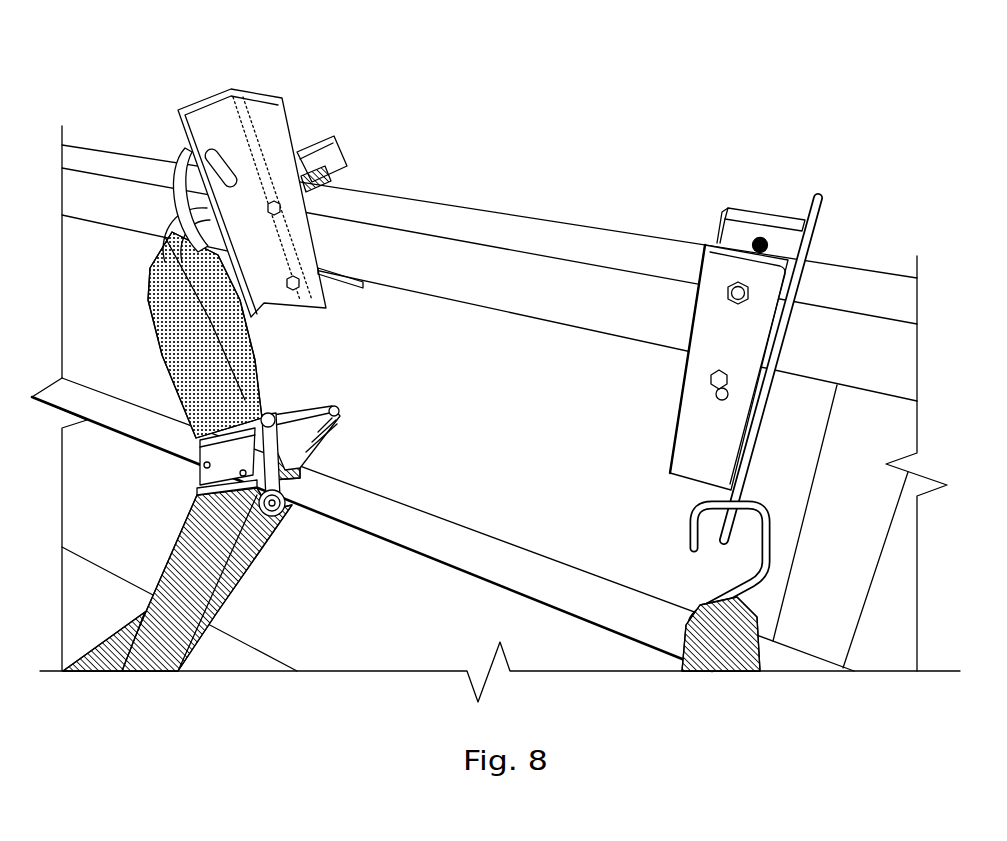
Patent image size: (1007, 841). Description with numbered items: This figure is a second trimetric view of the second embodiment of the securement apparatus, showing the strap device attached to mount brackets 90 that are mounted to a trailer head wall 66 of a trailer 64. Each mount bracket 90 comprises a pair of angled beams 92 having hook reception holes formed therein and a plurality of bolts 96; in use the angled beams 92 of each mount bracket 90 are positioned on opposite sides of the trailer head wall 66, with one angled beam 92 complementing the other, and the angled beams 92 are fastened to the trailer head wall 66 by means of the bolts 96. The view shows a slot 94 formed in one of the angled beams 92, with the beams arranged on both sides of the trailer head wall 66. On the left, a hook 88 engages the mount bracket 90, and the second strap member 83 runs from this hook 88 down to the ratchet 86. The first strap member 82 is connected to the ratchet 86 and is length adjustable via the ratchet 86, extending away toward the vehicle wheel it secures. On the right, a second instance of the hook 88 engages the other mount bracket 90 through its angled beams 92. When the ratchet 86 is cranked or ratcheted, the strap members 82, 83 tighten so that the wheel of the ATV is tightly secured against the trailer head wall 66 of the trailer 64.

The trailer 64 is at (398, 580).
The trailer head wall 66 is at (508, 233).
The first strap member 82 is at (205, 568).
The second strap member 83 is at (190, 323).
The ratchet 86 is at (330, 446).
The hook 88 is at (176, 150).
The mount bracket 90 is at (846, 187).
The angled beam 92 is at (339, 135).
The slot 94 is at (216, 136).
The bolt 96 is at (297, 278).